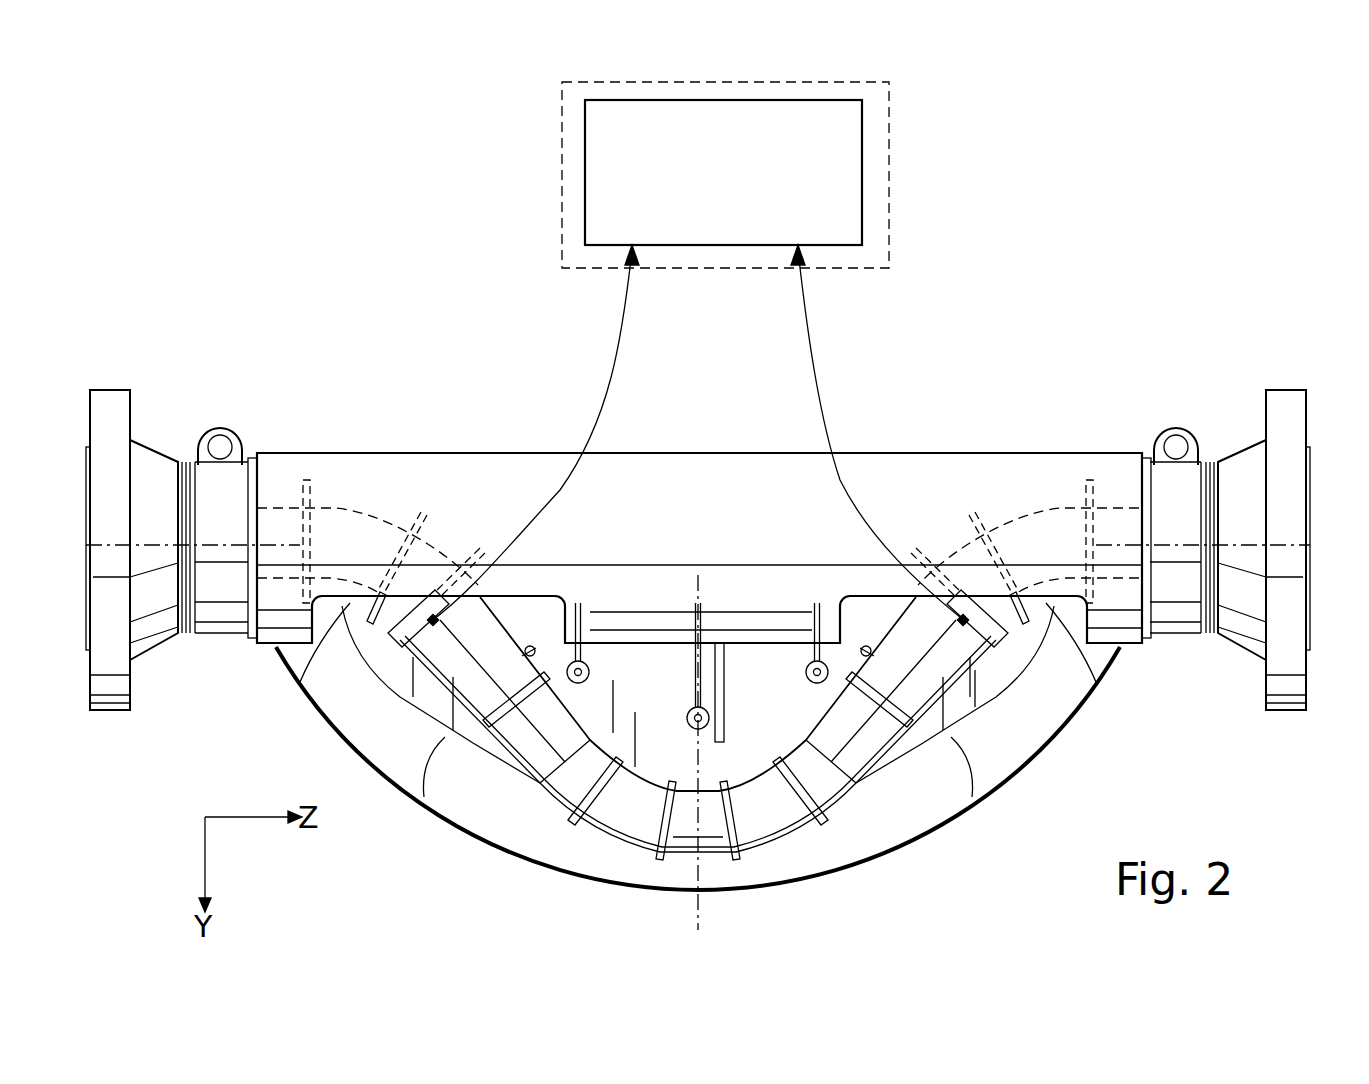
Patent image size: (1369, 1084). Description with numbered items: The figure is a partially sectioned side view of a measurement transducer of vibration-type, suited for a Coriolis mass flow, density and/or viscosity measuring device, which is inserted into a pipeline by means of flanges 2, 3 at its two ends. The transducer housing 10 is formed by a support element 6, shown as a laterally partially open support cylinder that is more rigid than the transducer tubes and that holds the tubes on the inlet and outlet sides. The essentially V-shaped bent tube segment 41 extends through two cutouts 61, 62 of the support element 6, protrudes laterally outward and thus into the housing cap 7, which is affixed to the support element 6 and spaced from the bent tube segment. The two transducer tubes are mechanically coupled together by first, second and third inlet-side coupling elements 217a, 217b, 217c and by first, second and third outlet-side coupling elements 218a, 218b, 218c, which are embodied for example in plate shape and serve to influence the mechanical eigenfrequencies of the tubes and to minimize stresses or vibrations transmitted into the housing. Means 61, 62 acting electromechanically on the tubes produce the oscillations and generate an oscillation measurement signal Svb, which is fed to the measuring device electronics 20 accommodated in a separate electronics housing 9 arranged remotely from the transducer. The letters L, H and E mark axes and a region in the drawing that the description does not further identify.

The flange 2 is at (108, 400).
The flange 3 is at (1287, 405).
The support element 6 is at (889, 465).
The housing cap 7 is at (992, 770).
The electronics housing 9 is at (560, 167).
The transducer housing 10 is at (370, 436).
The measuring device electronics 20 is at (742, 189).
The bent tube segment 41 is at (635, 810).
The cutout 61 is at (417, 632).
The cutout 62 is at (998, 645).
The first inlet-side coupling element 217a is at (403, 640).
The second inlet-side coupling element 217b is at (427, 513).
The third inlet-side coupling element 217c is at (306, 478).
The first outlet-side coupling element 218a is at (993, 640).
The second outlet-side coupling element 218b is at (971, 513).
The third outlet-side coupling element 218c is at (1091, 478).
The exciter E is at (773, 708).
The vertical symmetry axis H is at (705, 915).
The longitudinal axis L is at (82, 545).
The oscillation measurement signal Svb is at (698, 433).